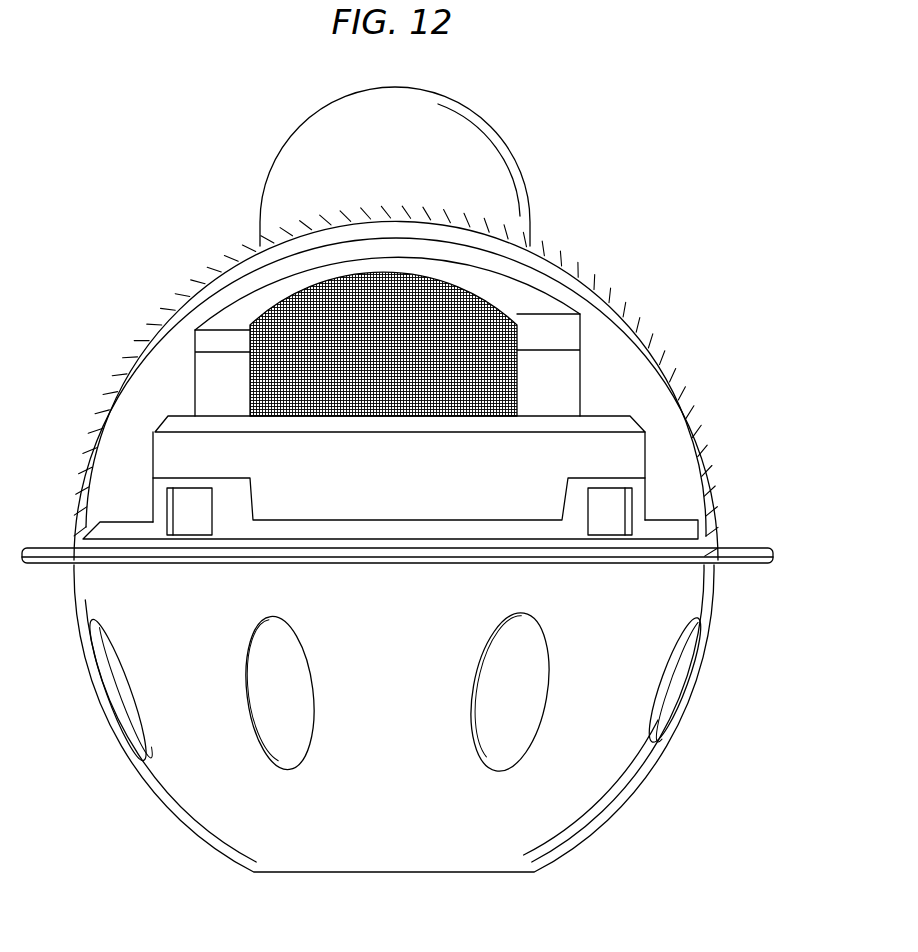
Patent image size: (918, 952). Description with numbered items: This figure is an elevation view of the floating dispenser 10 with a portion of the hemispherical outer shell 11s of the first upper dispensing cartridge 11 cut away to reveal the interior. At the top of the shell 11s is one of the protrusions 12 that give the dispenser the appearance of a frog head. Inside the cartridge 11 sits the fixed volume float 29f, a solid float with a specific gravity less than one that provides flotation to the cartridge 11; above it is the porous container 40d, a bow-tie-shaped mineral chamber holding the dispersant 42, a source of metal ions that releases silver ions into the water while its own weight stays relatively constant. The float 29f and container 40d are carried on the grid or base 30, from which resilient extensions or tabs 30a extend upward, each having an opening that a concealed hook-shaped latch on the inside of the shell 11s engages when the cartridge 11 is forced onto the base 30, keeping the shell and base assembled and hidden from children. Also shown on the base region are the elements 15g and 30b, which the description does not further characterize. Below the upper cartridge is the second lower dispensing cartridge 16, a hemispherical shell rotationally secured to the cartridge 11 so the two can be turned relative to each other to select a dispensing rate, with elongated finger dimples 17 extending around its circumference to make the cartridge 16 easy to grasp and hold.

The dispenser 10 is at (685, 227).
The first upper dispensing cartridge 11 is at (702, 448).
The outer cap or shell 11s is at (643, 327).
The protrusion 12 is at (478, 115).
The mounting plate 15g is at (750, 547).
The second lower dispensing cartridge 16 is at (713, 642).
The elongated finger dimples 17 is at (680, 673).
The fixed volume float 29f is at (633, 442).
The grid or base 30 is at (356, 519).
The resilient extension or tab 30a is at (157, 497).
The stage supports 30b is at (193, 515).
The porous container 40d is at (270, 310).
The dispersant 42 is at (478, 280).